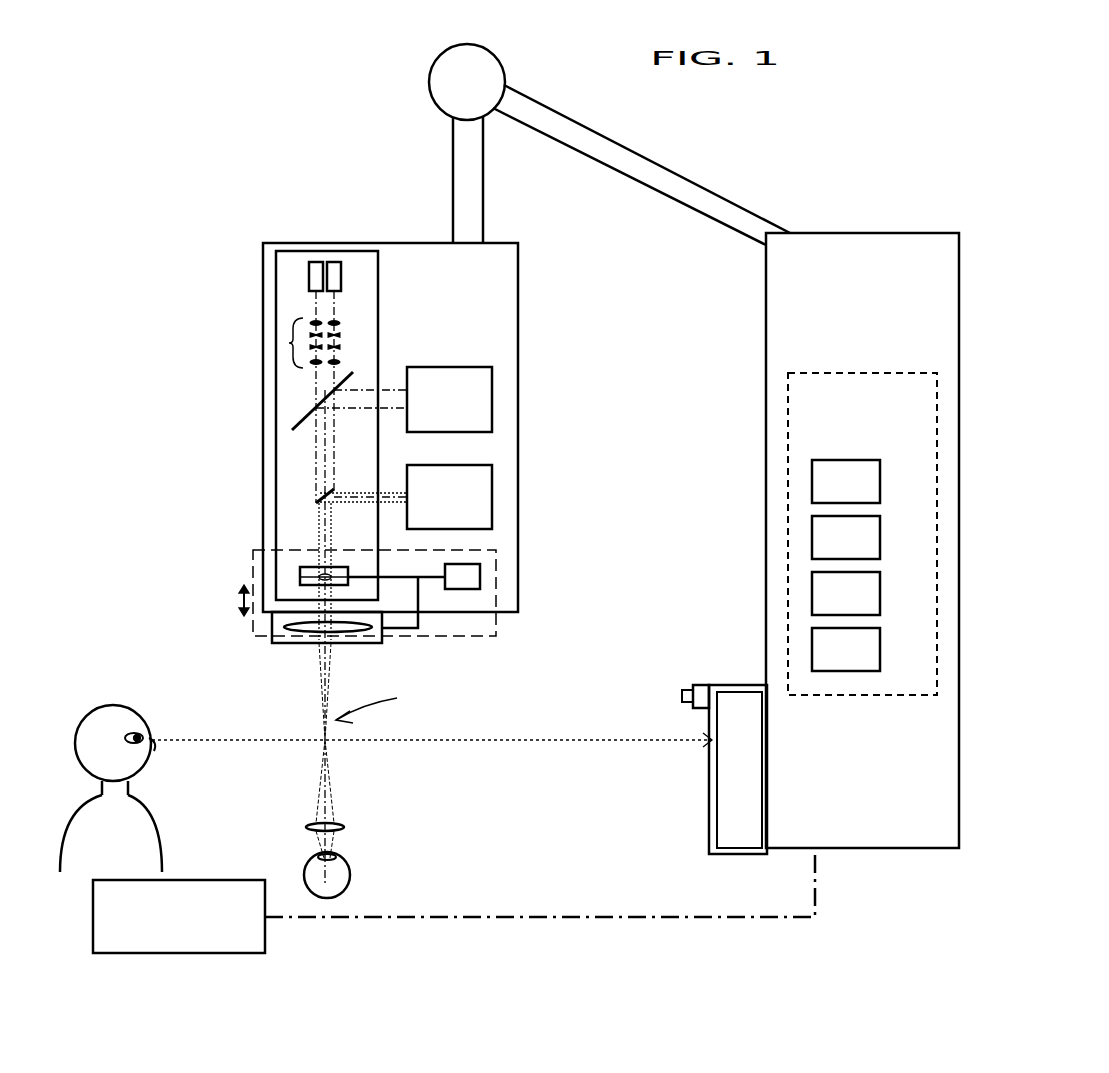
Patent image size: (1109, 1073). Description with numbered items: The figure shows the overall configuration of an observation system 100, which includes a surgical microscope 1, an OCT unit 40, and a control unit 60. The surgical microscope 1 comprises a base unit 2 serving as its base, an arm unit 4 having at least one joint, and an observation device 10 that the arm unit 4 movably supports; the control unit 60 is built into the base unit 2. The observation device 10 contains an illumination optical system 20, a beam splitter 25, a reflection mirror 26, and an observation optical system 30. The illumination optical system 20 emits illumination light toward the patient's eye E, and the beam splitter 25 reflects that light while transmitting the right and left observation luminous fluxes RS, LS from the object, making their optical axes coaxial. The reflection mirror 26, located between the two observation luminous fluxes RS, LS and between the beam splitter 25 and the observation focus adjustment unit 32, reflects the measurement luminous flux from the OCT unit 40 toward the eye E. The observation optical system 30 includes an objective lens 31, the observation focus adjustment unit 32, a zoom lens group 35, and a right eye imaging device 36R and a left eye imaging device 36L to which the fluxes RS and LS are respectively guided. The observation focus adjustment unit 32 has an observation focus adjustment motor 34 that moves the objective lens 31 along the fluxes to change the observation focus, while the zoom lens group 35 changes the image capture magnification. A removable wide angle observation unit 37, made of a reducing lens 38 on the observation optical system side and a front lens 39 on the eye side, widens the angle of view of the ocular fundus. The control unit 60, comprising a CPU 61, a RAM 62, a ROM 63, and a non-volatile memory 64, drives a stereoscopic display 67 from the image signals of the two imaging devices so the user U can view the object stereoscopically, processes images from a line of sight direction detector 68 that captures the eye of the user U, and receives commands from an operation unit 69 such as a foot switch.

The observation system 100 is at (220, 62).
The surgical microscope 1 is at (243, 205).
The base unit 2 is at (916, 233).
The arm unit 4 is at (429, 80).
The observation device 10 is at (283, 243).
The illumination optical system 20 is at (492, 412).
The beam splitter 25 is at (302, 420).
The reflection mirror 26 is at (318, 497).
The observation optical system 30 is at (276, 302).
The objective lens 31 is at (308, 568).
The observation focus adjustment unit 32 is at (252, 627).
The observation focus adjustment motor 34 is at (480, 575).
The zoom lens group 35 is at (293, 343).
The left eye imaging device 36L is at (309, 273).
The right eye imaging device 36R is at (341, 273).
The wide angle observation unit 37 is at (192, 670).
The reducing lens 38 is at (272, 636).
The front lens 39 is at (307, 825).
The OCT unit 40 is at (492, 503).
The control unit 60 is at (900, 373).
The CPU 61 is at (880, 483).
The RAM 62 is at (880, 539).
The ROM 63 is at (880, 595).
The non-volatile memory 64 is at (880, 651).
The display 67 is at (709, 777).
The line of sight direction detector 68 is at (705, 685).
The operation unit 69 is at (93, 917).
The user U is at (115, 705).
The patient's eye E is at (341, 874).
The left eye observation luminous flux LS is at (316, 440).
The right eye observation luminous flux RS is at (334, 440).